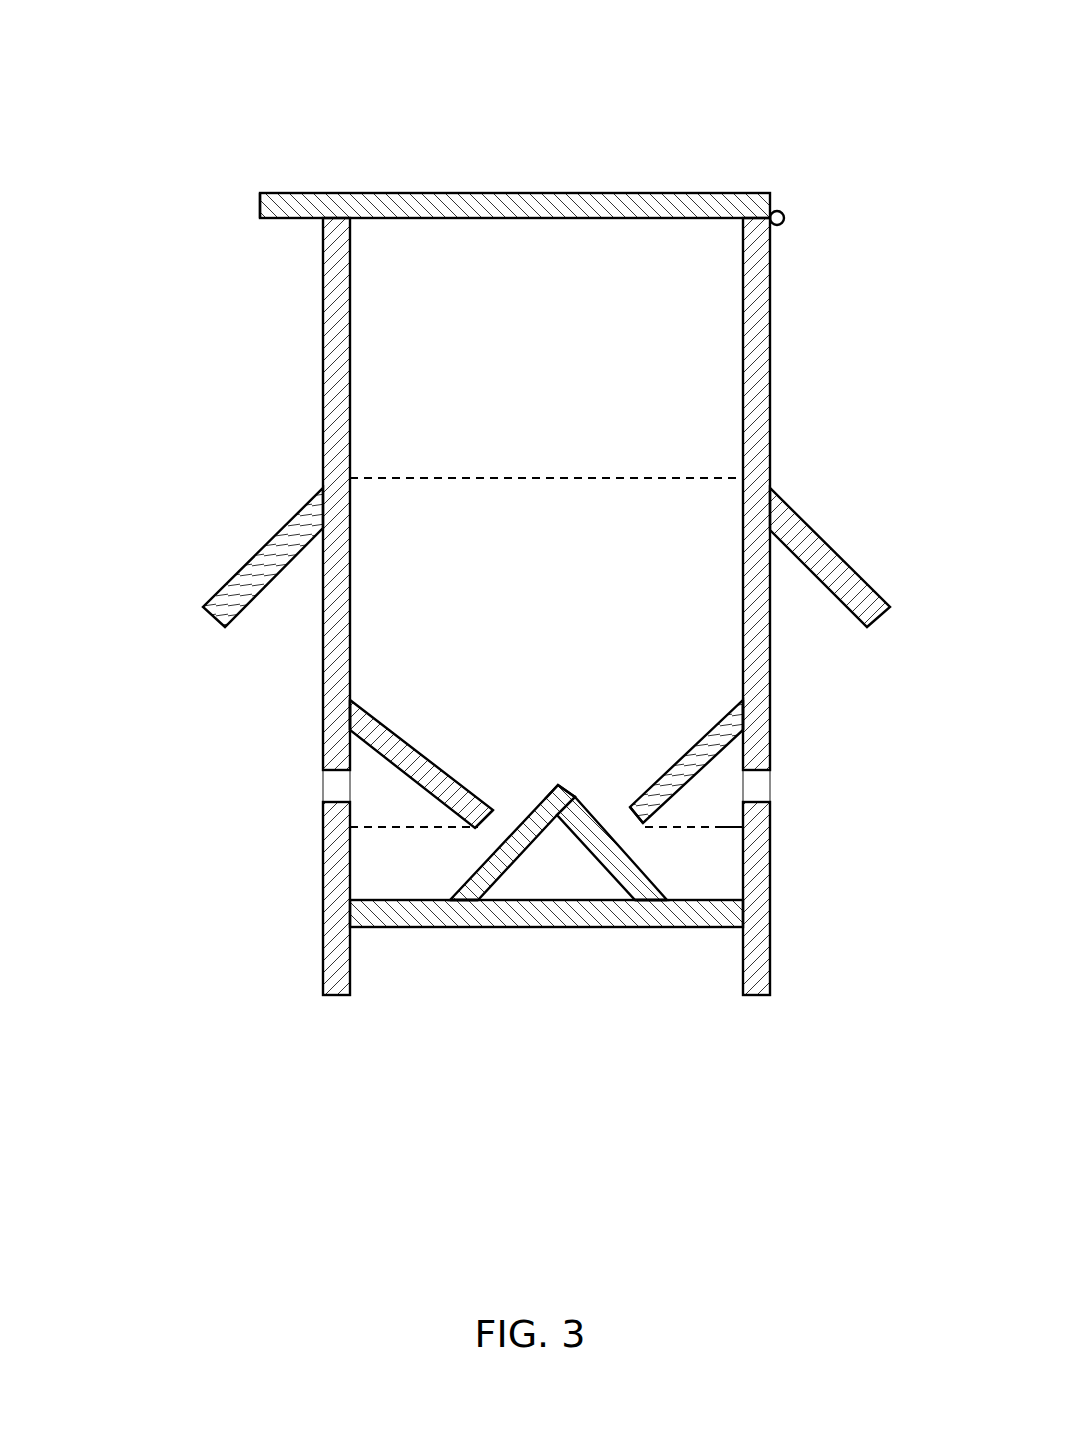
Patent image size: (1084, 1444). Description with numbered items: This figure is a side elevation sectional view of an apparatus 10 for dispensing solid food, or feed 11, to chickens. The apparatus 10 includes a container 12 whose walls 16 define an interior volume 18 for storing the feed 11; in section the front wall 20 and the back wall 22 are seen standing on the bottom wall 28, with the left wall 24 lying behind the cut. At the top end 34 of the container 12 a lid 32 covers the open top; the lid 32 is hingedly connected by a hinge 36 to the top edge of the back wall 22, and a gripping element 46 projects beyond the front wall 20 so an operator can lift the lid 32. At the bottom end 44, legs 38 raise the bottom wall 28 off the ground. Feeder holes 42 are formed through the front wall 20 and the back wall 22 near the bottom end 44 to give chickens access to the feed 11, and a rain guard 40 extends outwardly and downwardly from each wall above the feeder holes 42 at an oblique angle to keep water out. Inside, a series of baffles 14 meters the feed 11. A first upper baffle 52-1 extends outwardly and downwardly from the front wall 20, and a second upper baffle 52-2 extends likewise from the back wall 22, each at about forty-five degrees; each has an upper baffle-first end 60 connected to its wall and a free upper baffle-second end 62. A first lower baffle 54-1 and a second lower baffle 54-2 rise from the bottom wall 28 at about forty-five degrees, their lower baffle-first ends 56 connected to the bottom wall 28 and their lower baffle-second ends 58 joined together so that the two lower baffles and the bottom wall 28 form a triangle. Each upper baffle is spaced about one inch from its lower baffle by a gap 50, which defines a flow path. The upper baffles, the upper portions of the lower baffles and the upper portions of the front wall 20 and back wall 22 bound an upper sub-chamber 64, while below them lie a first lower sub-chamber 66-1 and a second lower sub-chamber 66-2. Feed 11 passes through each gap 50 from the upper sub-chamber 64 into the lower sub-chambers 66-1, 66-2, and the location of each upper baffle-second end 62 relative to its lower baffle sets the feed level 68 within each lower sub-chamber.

The apparatus 10 is at (820, 122).
The feed 11 is at (665, 478).
The container 12 is at (828, 285).
The baffles 14 is at (592, 697).
The walls 16 is at (295, 406).
The interior volume 18 is at (627, 265).
The front wall 20 is at (322, 279).
The back wall 22 is at (775, 327).
The left wall 24 is at (537, 283).
The bottom wall 28 is at (600, 930).
The lid 32 is at (467, 193).
The top end 34 is at (195, 193).
The hinge 36 is at (784, 213).
The legs 38 is at (323, 948).
The rain guard 40 is at (250, 560).
The feeder holes 42 is at (323, 787).
The bottom end 44 is at (290, 1020).
The gripping element 46 is at (277, 193).
The gap 50 is at (505, 822).
The first upper baffle 52-1 is at (398, 733).
The second upper baffle 52-2 is at (703, 735).
The first lower baffle 54-1 is at (465, 868).
The second lower baffle 54-2 is at (640, 872).
The lower baffle-first end 56 is at (432, 897).
The lower baffle-second end 58 is at (577, 797).
The upper baffle-first end 60 is at (350, 703).
The upper baffle-second end 62 is at (493, 810).
The upper sub-chamber 64 is at (445, 458).
The first lower sub-chamber 66-1 is at (375, 782).
The second lower sub-chamber 66-2 is at (703, 785).
The feed level 68 is at (382, 830).